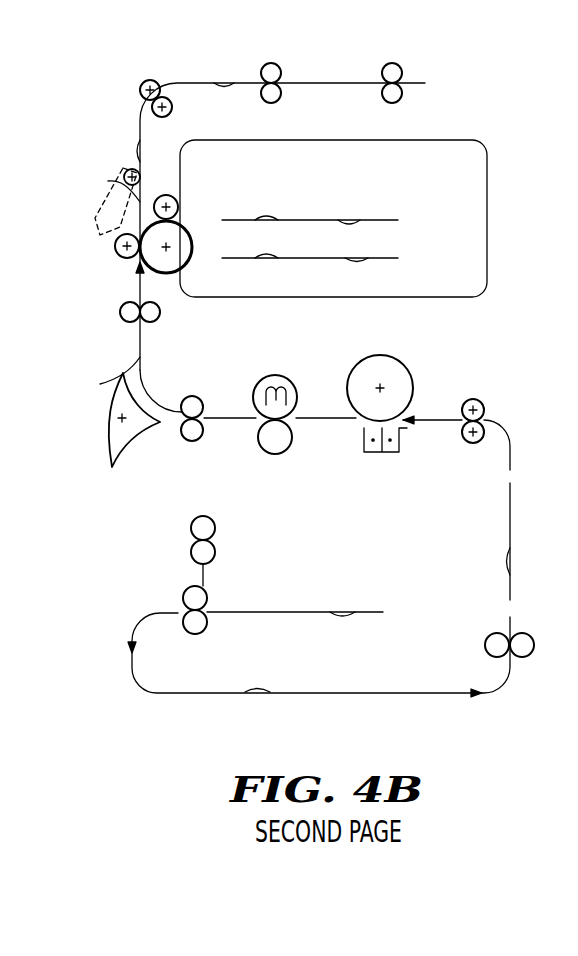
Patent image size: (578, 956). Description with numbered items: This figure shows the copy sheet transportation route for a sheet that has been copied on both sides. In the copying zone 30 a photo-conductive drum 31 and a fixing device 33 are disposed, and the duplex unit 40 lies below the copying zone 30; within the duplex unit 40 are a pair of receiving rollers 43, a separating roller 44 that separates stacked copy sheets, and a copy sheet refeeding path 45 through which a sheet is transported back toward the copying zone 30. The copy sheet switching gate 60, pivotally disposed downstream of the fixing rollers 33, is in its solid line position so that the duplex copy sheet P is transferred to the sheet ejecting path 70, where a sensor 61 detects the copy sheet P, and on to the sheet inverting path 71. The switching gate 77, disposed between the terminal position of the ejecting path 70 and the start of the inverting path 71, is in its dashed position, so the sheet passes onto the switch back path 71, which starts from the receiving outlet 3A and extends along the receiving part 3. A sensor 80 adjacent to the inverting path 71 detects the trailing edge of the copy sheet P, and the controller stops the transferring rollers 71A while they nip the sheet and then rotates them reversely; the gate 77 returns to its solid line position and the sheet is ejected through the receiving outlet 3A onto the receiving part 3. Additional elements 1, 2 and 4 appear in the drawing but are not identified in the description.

The transferring rollers 71A is at (150, 80).
The copy sheet P is at (143, 118).
The sensor 1 is at (134, 145).
The sensor 80 is at (109, 181).
The switching gate 77 is at (95, 217).
The receiving outlet 3A is at (183, 222).
The sensor 4 is at (264, 215).
The receiving part 3 is at (351, 227).
The sensor 2 is at (267, 255).
The copy sheet switch back path 71 is at (347, 86).
The ejecting path 70 is at (138, 336).
The sensor 61 is at (106, 381).
The copy sheet switching gate 60 is at (107, 448).
The fixing device 33 is at (291, 382).
The photo-conductive drum 31 is at (412, 378).
The copying zone 30 is at (414, 437).
The pair of receiving rollers 43 is at (207, 516).
The separating roller 44 is at (183, 597).
The copy sheet refeeding path 45 is at (190, 694).
The duplex unit 40 is at (400, 603).